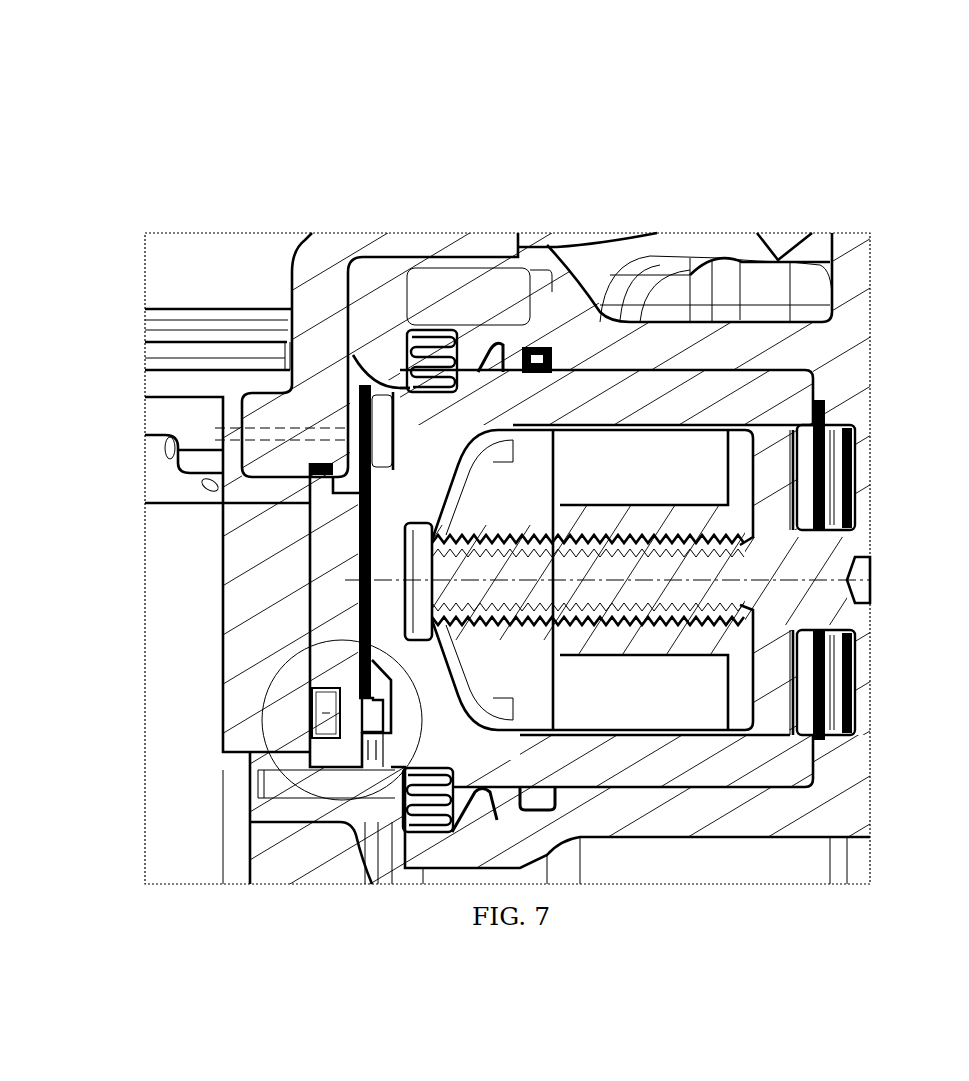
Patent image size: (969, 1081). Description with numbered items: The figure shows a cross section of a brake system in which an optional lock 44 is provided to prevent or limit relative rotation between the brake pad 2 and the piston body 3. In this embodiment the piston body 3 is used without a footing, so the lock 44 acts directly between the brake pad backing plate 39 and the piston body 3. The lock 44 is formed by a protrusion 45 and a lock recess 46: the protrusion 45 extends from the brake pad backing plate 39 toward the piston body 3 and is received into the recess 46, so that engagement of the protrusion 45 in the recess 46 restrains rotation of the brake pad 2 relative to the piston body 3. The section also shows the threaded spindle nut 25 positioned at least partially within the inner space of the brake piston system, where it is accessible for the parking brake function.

The brake pad 2 is at (287, 632).
The piston body 3 is at (704, 400).
The spindle nut 25 is at (561, 420).
The brake pad backing plate 39 is at (360, 638).
The lock 44 is at (263, 683).
The protrusion 45 is at (358, 738).
The lock recess 46 is at (378, 745).